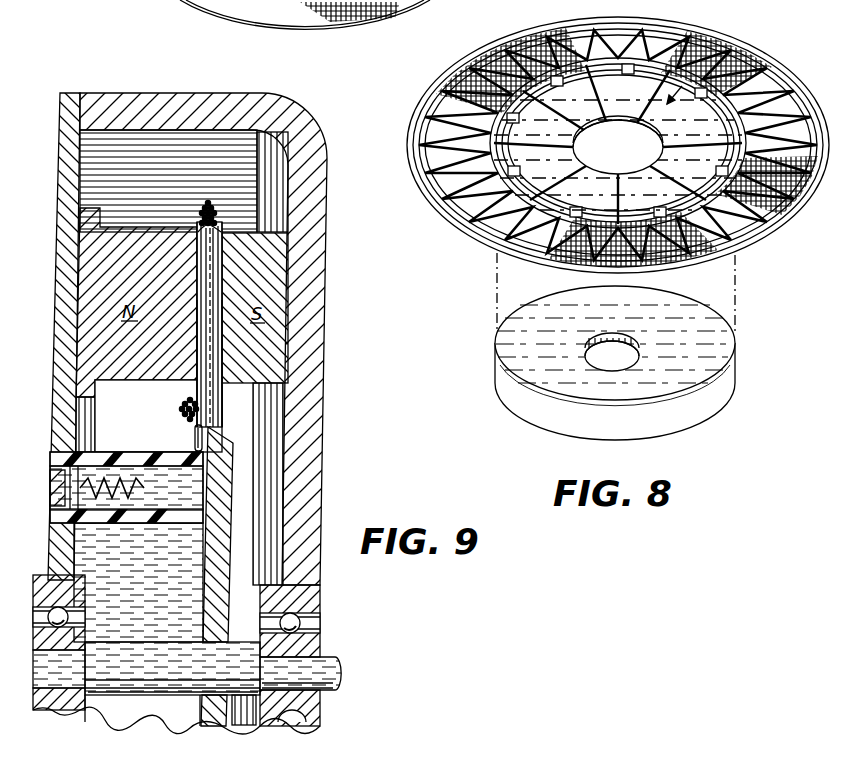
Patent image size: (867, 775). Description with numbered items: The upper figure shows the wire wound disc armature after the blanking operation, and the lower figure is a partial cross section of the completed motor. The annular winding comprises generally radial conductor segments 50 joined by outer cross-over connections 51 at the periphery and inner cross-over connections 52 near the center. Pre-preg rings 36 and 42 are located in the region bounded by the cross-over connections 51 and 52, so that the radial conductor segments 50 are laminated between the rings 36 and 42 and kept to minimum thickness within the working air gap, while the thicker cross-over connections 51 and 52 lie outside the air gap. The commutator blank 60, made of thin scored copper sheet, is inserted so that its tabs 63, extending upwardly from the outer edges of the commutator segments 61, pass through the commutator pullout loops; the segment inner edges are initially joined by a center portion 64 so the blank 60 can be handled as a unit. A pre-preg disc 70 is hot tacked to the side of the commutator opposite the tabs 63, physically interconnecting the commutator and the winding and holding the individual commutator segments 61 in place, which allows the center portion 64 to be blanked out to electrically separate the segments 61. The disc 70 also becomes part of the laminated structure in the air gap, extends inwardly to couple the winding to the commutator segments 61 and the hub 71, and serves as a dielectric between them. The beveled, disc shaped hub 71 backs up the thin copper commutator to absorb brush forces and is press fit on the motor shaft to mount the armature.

In FIG. 9, the pre-preg ring 36 is at (203, 216).
In FIG. 9, the pre-preg ring 42 is at (216, 233).
In FIG. 8, the radial conductor segments 50 is at (492, 217).
In FIG. 9, the radial conductor segments 50 is at (219, 224).
In FIG. 8, the outer cross-over connections 51 is at (436, 81).
In FIG. 9, the outer cross-over connections 51 is at (214, 201).
In FIG. 9, the inner cross-over connections 52 is at (180, 410).
In FIG. 8, the commutator blank 60 is at (683, 52).
In FIG. 9, the commutator segments 61 is at (197, 550).
In FIG. 9, the tabs 63 is at (196, 437).
In FIG. 8, the center portion 64 is at (630, 105).
In FIG. 8, the pre-preg disc 70 is at (630, 134).
In FIG. 9, the pre-preg disc 70 is at (222, 395).
In FIG. 8, the hub 71 is at (622, 310).
In FIG. 9, the hub 71 is at (234, 480).